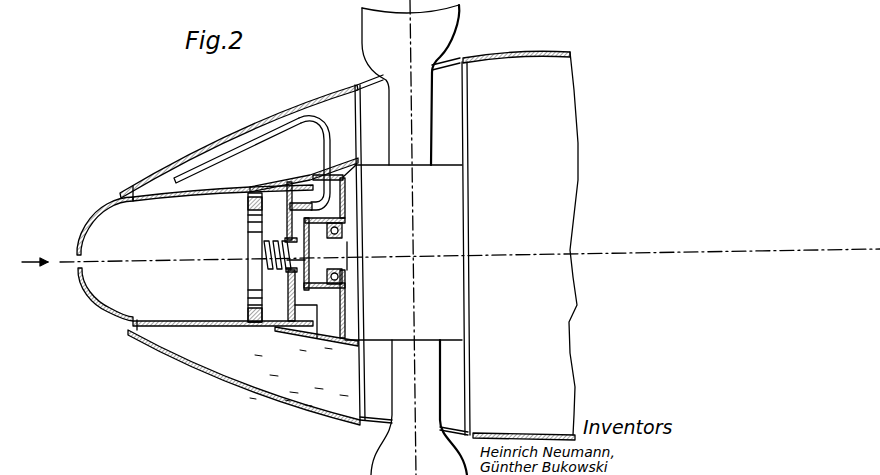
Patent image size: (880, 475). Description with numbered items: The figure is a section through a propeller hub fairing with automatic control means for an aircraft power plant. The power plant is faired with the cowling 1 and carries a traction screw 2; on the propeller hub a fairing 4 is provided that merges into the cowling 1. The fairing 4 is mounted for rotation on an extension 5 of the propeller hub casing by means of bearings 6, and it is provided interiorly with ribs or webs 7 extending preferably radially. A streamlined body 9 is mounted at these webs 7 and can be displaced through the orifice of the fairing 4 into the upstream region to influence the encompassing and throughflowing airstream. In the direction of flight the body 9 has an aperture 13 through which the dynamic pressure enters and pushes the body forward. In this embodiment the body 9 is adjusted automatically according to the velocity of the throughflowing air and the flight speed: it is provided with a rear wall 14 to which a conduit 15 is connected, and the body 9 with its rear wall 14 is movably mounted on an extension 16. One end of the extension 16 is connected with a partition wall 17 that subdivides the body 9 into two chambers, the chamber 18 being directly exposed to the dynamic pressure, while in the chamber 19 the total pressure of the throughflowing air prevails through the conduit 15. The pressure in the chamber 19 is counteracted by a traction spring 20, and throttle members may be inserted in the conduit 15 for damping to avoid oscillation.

The cowling 1 is at (505, 55).
The traction screw 2 is at (462, 28).
The fairing 4 is at (213, 373).
The extension of the propeller hub casing 5 is at (350, 265).
The bearings 6 is at (345, 227).
The ribs or webs 7 is at (263, 372).
The streamlined body 9 is at (108, 310).
The aperture 13 is at (72, 262).
The rear wall 14 is at (318, 340).
The conduit 15 is at (236, 152).
The extension 16 is at (295, 178).
The partition wall 17 is at (250, 323).
The chamber 18 is at (223, 248).
The chamber 19 is at (268, 257).
The traction spring 20 is at (263, 242).